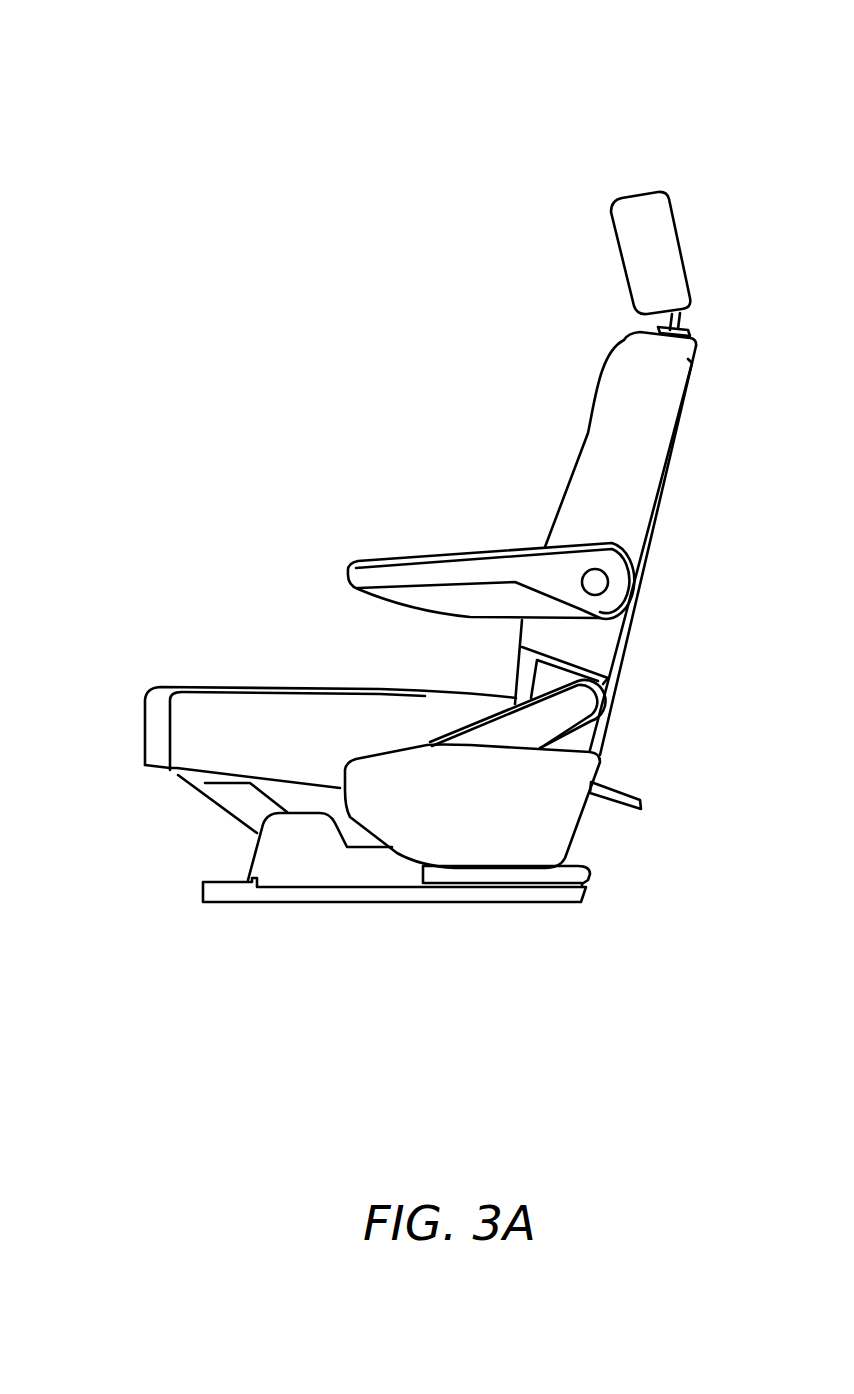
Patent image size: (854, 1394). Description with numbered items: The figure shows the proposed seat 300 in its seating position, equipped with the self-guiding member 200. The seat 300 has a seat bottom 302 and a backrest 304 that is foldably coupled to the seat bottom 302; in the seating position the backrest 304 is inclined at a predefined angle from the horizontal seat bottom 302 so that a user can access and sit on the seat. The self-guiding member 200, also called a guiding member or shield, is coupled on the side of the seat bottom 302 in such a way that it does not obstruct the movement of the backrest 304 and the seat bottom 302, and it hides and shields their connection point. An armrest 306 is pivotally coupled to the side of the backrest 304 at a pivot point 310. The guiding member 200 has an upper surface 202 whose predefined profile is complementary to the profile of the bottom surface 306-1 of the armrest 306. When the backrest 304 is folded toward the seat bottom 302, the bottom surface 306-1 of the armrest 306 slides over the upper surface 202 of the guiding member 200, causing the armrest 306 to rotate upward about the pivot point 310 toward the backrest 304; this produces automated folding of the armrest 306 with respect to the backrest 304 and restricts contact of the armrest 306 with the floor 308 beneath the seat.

The seat 300 is at (160, 60).
The seat bottom 302 is at (160, 687).
The backrest 304 is at (588, 435).
The armrest 306 is at (393, 558).
The bottom surface of the armrest 306-1 is at (433, 615).
The pivot point 310 is at (598, 586).
The upper surface 202 is at (400, 750).
The self-guiding member 200 is at (600, 770).
The floor 308 is at (265, 897).